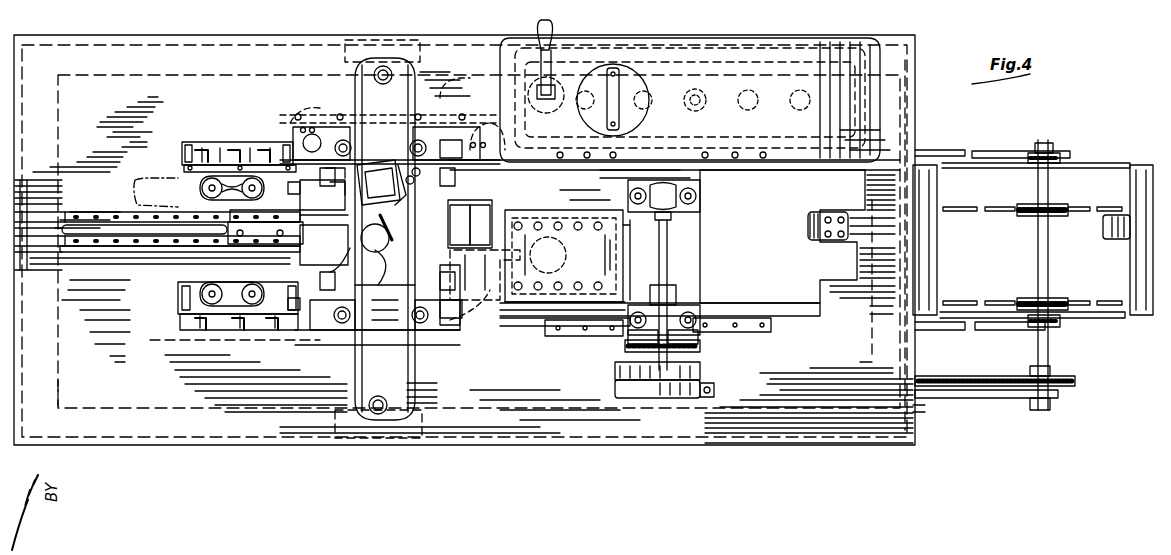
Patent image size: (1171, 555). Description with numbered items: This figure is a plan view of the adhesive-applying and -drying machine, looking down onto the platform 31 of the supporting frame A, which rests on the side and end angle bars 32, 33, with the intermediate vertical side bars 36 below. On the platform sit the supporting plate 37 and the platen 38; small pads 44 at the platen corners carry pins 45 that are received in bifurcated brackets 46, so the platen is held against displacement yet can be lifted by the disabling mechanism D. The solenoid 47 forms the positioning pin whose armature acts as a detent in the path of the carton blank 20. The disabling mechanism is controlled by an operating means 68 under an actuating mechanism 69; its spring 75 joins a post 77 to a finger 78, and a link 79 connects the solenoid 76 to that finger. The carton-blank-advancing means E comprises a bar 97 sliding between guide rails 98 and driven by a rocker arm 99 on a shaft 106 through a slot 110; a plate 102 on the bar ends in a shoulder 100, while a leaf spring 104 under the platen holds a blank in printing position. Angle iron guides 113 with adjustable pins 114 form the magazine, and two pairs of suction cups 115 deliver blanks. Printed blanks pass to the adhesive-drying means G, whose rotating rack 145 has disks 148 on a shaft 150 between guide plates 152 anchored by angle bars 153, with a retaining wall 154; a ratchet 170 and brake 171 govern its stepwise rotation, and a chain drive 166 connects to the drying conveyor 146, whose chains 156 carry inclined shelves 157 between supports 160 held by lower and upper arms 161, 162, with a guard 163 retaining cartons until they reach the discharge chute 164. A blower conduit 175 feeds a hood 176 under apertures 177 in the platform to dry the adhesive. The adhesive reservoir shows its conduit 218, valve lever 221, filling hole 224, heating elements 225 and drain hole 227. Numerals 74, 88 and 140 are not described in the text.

The carton blank 20 is at (150, 272).
The platform 31 is at (539, 363).
The side angle bars 32 is at (130, 408).
The end angle bars 33 is at (58, 382).
The intermediate vertical side bars 36 is at (345, 52).
The supporting plate 37 is at (478, 322).
The platen 38 is at (470, 262).
The pads 44 is at (328, 130).
The pins 45 is at (452, 141).
The bifurcated brackets 46 is at (455, 140).
The solenoid 47 is at (472, 215).
The operating means 68 is at (339, 181).
The actuating mechanism 69 is at (420, 177).
The lever 74 is at (334, 267).
The spring 75 is at (389, 250).
The solenoid 76 is at (378, 182).
The post 77 is at (385, 307).
The finger 78 is at (390, 222).
The link 79 is at (404, 196).
The stop 88 is at (290, 245).
The bar 97 is at (324, 248).
The guide rails 98 is at (93, 212).
The rocker arm 99 is at (471, 224).
The shoulder 100 is at (324, 236).
The plate 102 is at (285, 248).
The leaf spring 104 is at (322, 195).
The shaft 106 is at (316, 237).
The slot 110 is at (127, 236).
The angle iron guides 113 is at (182, 158).
The pins 114 is at (278, 322).
The suction cups 115 is at (200, 188).
The plate 140 is at (300, 207).
The rotating rack 145 is at (782, 236).
The drying conveyor 146 is at (1033, 275).
The disks 148 is at (712, 212).
The shaft 150 is at (700, 348).
The guide plates 152 is at (812, 160).
The angle bars 153 is at (758, 333).
The retaining wall 154 is at (822, 218).
The chains 156 is at (1030, 218).
The inclined shelves 157 is at (1112, 208).
The supports 160 is at (1060, 160).
The lower arms 161 is at (975, 398).
The upper arms 162 is at (1010, 128).
The guard 163 is at (1103, 228).
The discharge chute 164 is at (1140, 318).
The chain drive 166 is at (998, 382).
The ratchet 170 is at (700, 378).
The brake 171 is at (714, 394).
The conduit 175 is at (560, 248).
The hood 176 is at (620, 255).
The apertures 177 is at (555, 290).
The conduit 218 is at (500, 62).
The lever 221 is at (556, 45).
The filling hole 224 is at (620, 80).
The heating elements 225 is at (790, 105).
The drain hole 227 is at (702, 95).
The supporting frame A is at (180, 452).
The disabling mechanism D is at (385, 239).
The carton-blank-advancing means E is at (227, 241).
The adhesive-drying means G is at (881, 261).